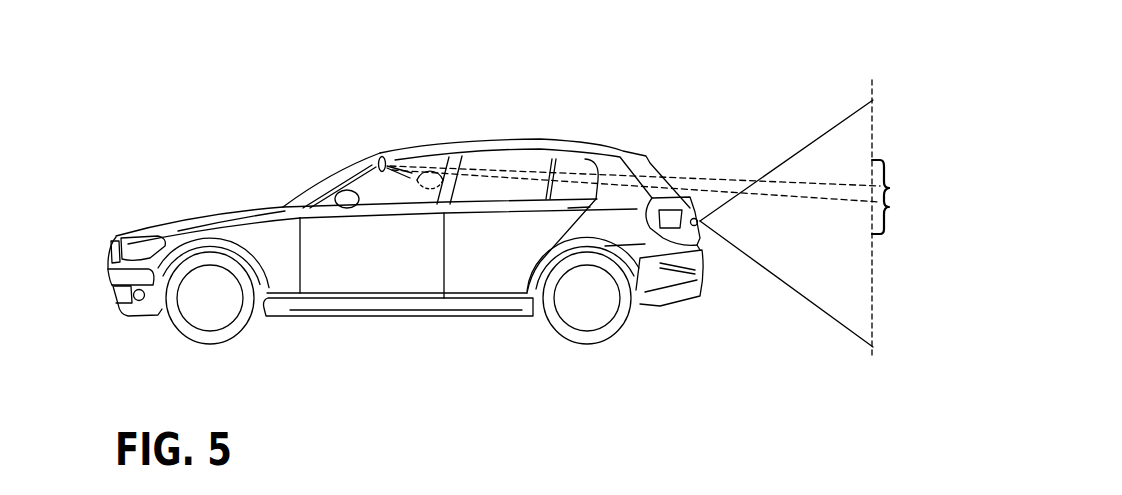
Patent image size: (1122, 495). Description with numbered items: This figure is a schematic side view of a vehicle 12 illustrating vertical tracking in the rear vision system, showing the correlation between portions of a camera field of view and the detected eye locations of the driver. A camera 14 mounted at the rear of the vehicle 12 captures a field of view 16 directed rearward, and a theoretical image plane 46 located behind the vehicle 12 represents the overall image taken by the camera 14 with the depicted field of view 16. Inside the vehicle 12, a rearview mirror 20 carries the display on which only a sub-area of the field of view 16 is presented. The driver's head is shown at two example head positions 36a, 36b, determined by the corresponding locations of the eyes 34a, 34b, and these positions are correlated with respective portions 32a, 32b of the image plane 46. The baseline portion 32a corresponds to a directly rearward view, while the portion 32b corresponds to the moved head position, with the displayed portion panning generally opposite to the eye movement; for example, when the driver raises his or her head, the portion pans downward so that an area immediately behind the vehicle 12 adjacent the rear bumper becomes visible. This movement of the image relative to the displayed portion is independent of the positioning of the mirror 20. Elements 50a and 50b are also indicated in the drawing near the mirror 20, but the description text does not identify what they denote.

The vehicle 12 is at (332, 128).
The camera 14 is at (705, 224).
The field of view 16 is at (803, 147).
The rearview mirror 20 is at (381, 152).
The baseline portion of the image 32a is at (887, 186).
The portion of the image 32b is at (888, 211).
The first eye position 34a is at (432, 170).
The second eye position 34b is at (428, 195).
The first head position 36a is at (426, 167).
The second head position 36b is at (426, 197).
The theoretical image plane 46 is at (873, 304).
The first sensor 50a is at (410, 170).
The second sensor 50b is at (413, 172).